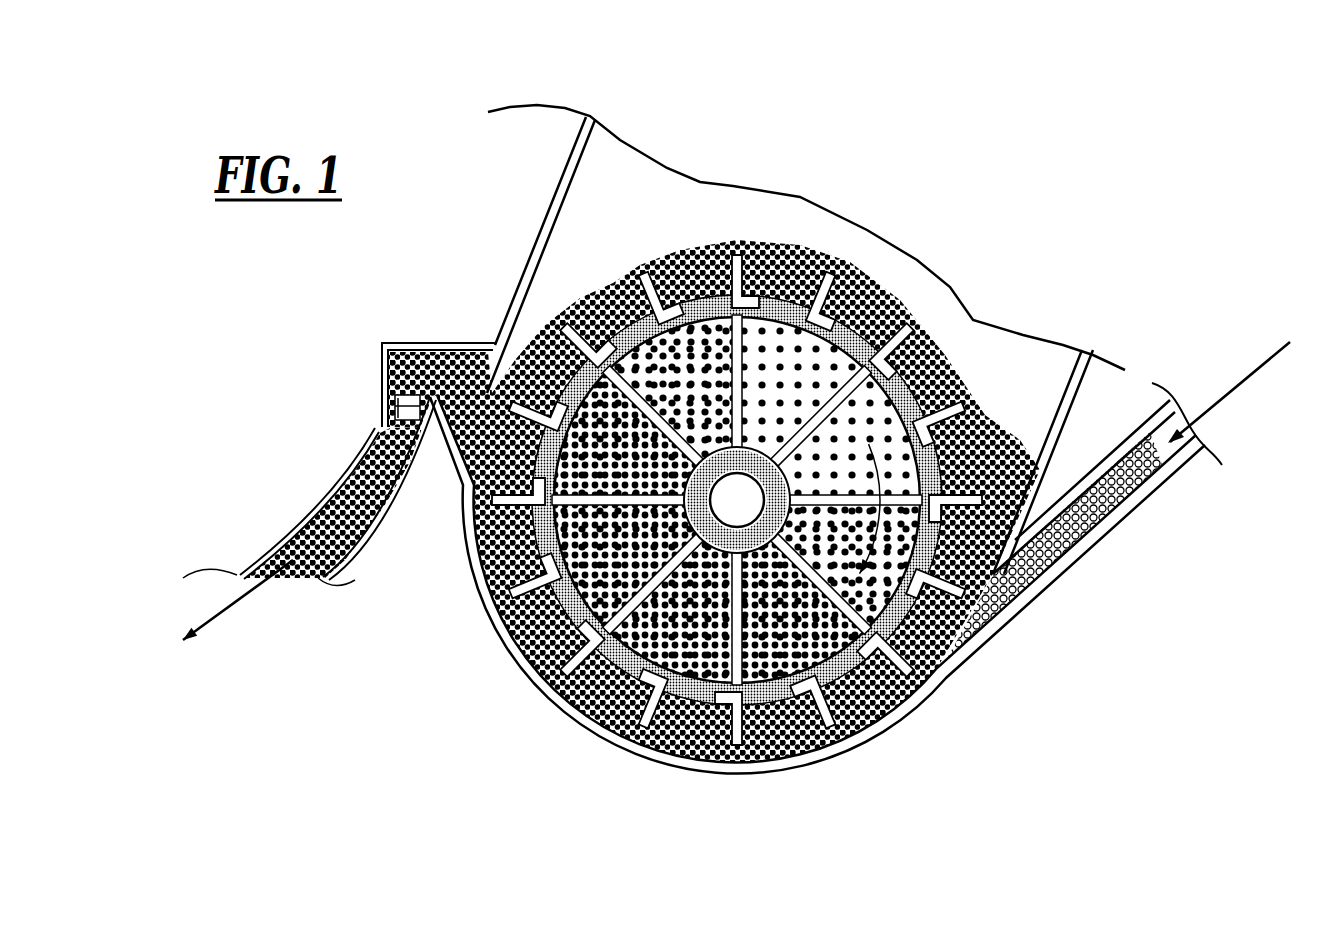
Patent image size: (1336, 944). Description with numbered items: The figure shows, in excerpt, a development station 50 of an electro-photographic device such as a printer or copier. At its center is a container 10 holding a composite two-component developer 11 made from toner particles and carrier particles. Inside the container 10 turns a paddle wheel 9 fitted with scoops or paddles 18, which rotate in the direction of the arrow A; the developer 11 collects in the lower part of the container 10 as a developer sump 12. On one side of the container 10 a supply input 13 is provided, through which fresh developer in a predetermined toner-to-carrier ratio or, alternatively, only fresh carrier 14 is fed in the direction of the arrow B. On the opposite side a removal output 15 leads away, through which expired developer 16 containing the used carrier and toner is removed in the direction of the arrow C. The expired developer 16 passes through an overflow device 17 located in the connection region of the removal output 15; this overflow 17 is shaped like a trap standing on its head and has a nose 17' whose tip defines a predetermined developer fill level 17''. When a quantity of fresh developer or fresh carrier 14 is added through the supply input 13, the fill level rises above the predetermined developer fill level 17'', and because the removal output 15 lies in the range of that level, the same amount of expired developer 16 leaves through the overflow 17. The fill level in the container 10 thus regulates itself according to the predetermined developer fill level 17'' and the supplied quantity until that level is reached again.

The development station 50 is at (975, 105).
The paddle wheel 9 is at (863, 287).
The container 10 is at (648, 762).
The two-component developer 11 is at (690, 257).
The developer sump 12 is at (523, 667).
The supply input 13 is at (1052, 578).
The fresh carrier 14 is at (1107, 513).
The removal output 15 is at (390, 527).
The expired developer 16 is at (340, 503).
The overflow device 17 is at (473, 272).
The nose 17' is at (325, 413).
The predetermined developer fill level 17'' is at (346, 397).
The paddles 18 is at (836, 330).
The direction of rotation A is at (938, 662).
The supply direction B is at (1239, 383).
The removal direction C is at (219, 617).